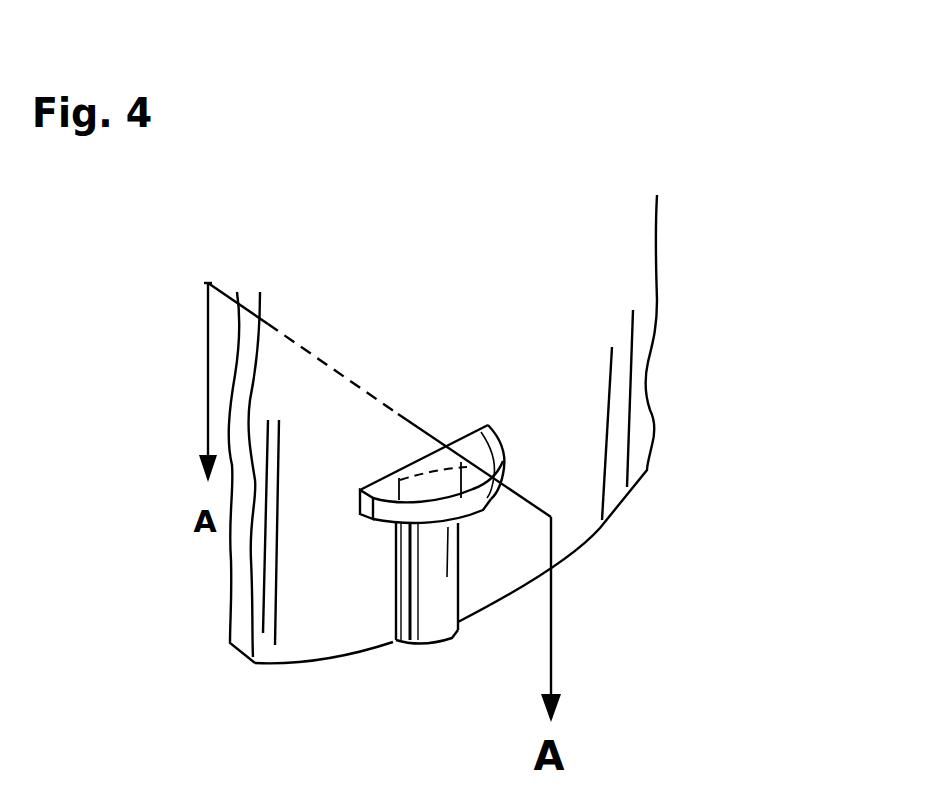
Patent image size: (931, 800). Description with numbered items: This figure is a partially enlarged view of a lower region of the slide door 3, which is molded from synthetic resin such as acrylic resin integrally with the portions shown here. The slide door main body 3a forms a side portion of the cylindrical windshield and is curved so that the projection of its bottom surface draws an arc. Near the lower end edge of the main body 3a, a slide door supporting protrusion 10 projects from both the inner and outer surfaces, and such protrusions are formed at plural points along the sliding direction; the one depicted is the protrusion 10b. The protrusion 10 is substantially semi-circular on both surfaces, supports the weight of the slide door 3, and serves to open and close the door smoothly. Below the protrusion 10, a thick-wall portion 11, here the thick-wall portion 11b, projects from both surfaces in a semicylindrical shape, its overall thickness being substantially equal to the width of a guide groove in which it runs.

The slide door 3 is at (536, 429).
The slide door main body 3a is at (573, 283).
The slide door supporting protrusion 10 is at (603, 466).
The protrusion 10b is at (480, 460).
The thick-wall portion 11 is at (394, 646).
The thick-wall portion 11b is at (423, 613).